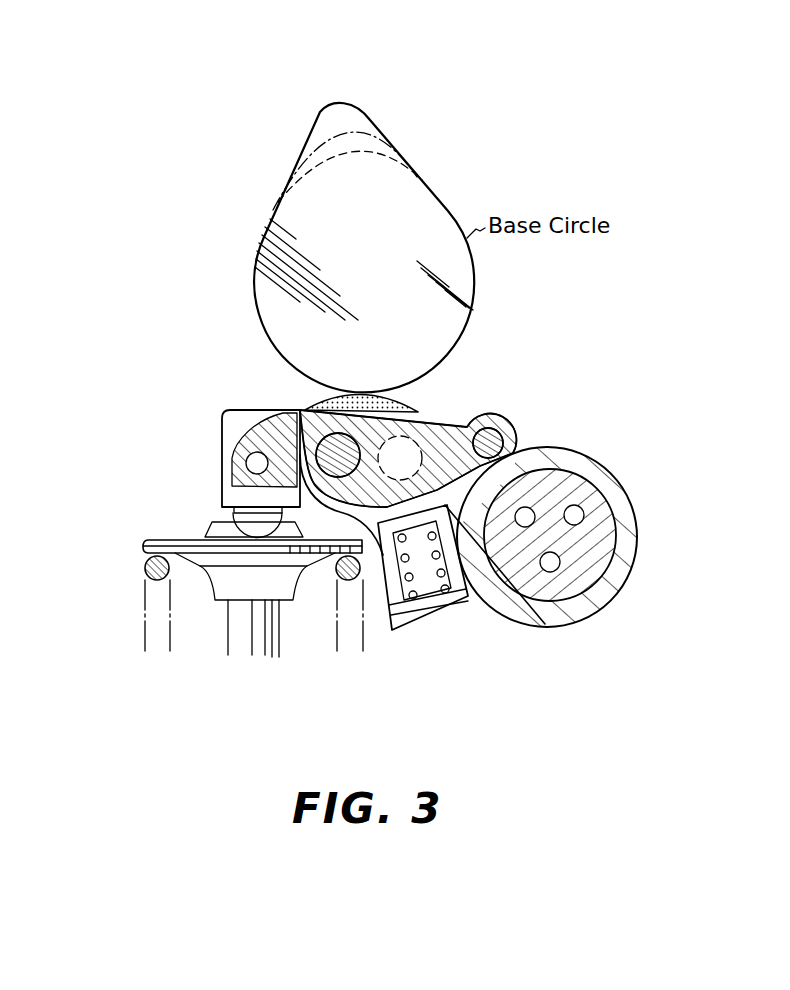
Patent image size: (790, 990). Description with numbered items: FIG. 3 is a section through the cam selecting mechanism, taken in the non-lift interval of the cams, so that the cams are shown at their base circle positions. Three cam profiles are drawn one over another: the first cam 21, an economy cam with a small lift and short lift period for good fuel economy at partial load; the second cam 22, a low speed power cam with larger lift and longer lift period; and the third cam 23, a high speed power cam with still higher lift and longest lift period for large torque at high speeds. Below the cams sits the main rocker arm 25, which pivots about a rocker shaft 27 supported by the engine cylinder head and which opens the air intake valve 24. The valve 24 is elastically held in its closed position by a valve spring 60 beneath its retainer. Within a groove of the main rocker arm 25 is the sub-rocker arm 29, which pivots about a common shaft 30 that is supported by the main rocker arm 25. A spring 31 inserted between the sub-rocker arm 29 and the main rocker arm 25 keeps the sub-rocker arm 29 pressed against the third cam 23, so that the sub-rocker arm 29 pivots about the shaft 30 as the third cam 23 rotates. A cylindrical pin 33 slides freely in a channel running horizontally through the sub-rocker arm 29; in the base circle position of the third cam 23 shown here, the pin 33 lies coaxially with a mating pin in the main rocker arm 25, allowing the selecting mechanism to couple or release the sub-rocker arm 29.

The first cam 21 is at (392, 150).
The second cam 22 is at (306, 143).
The third cam 23 is at (368, 118).
The air intake valve 24 is at (258, 635).
The main rocker arm 25 is at (213, 409).
The rocker shaft 27 is at (628, 535).
The sub-rocker arm 29 is at (448, 428).
The common shaft 30 is at (512, 430).
The spring 31 is at (418, 585).
The cylindrical pin 33 is at (305, 408).
The valve spring 60 is at (143, 569).